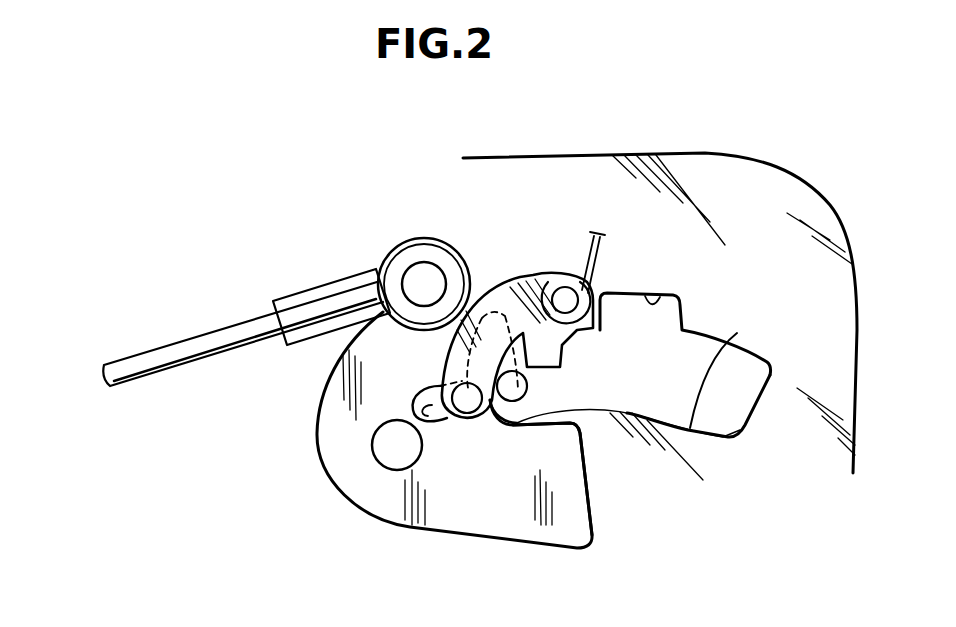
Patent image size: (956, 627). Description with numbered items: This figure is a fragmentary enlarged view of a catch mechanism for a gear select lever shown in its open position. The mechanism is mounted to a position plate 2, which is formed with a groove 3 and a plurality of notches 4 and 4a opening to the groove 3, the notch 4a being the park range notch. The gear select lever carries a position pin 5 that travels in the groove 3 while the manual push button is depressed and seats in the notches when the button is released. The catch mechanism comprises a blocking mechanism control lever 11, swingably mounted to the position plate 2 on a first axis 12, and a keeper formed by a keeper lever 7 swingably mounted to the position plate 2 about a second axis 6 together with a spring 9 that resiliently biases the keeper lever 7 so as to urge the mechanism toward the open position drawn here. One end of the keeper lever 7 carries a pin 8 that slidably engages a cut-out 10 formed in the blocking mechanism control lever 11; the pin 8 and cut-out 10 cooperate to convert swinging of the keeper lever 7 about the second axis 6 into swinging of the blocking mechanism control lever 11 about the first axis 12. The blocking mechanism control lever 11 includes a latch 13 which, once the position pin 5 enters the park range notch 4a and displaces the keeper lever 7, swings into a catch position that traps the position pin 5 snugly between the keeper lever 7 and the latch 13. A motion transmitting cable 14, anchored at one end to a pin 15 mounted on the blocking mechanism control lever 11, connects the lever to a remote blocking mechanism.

The position plate 2 is at (708, 160).
The groove 3 is at (735, 337).
The notch 4 is at (655, 300).
The P range notch 4a is at (497, 312).
The position pin 5 is at (517, 388).
The second axis 6 is at (565, 286).
The keeper lever 7 is at (447, 363).
The pin 8 is at (463, 402).
The spring 9 is at (598, 247).
The cut-out 10 is at (427, 415).
The blocking mechanism control lever 11 is at (330, 398).
The first axis 12 is at (395, 447).
The latch 13 is at (577, 494).
The motion transmitting cable 14 is at (222, 330).
The pin 15 is at (421, 280).